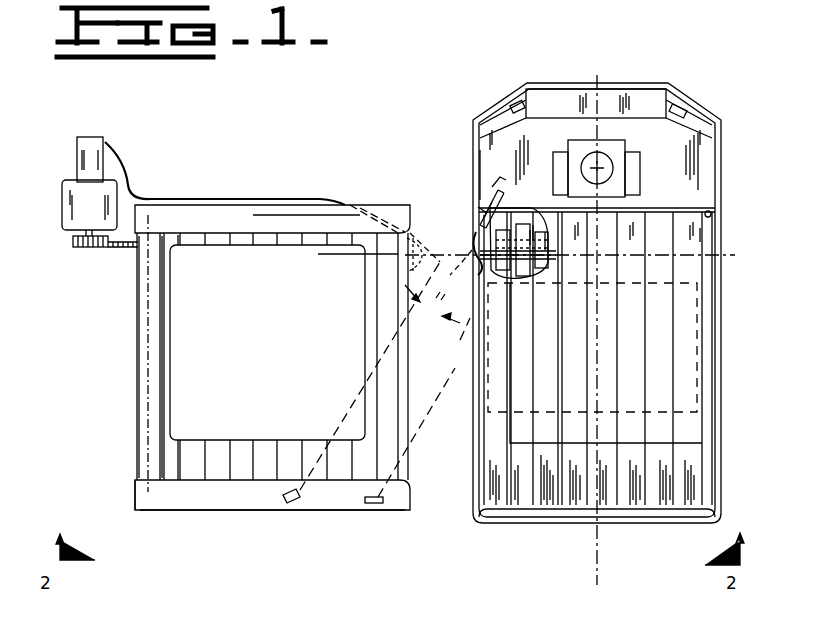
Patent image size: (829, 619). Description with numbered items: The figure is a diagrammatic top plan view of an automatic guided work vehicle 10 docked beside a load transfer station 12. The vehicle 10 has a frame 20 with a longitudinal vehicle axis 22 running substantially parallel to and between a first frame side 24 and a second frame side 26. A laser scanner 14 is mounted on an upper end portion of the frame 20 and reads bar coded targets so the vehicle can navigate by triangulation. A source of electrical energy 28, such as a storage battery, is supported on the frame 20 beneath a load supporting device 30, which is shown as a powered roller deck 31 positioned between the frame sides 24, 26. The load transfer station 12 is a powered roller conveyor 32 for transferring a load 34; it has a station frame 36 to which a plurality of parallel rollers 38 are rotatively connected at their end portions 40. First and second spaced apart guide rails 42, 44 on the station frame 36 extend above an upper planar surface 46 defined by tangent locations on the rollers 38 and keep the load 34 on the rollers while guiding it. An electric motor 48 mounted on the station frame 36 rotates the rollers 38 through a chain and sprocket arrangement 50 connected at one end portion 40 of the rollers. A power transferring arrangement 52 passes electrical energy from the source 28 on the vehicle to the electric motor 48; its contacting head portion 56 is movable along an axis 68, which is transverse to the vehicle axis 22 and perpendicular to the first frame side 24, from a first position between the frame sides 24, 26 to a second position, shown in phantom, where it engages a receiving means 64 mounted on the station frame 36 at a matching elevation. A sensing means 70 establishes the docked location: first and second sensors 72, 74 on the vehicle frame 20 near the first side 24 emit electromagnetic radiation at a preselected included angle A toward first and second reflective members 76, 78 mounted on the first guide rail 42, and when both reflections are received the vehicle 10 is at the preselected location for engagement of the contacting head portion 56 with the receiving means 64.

The work vehicle 10 is at (484, 103).
The load transfer station 12 is at (353, 200).
The laser scanner 14 is at (586, 152).
The frame 20 is at (633, 83).
The longitudinal vehicle axis 22 is at (597, 533).
The first frame side 24 is at (475, 397).
The second frame side 26 is at (720, 274).
The source of electrical energy 28 is at (705, 373).
The load supporting device 30 is at (529, 525).
The powered roller deck 31 is at (517, 502).
The powered roller conveyor 32 is at (138, 443).
The load 34 is at (279, 336).
The station frame 36 is at (227, 510).
The rollers 38 is at (160, 323).
The end portions 40 is at (240, 237).
The first guide rail 42 is at (193, 498).
The second guide rail 44 is at (253, 217).
The upper planar surface 46 is at (188, 240).
The electric motor 48 is at (98, 137).
The chain and sprocket arrangement 50 is at (100, 254).
The power transferring arrangement 52 is at (418, 157).
The contacting head portion 56 is at (489, 250).
The receiving means 64 is at (395, 273).
The axis 68 is at (340, 254).
The sensing means 70 is at (473, 201).
The first sensor 72 is at (477, 197).
The second sensor 74 is at (475, 208).
The first reflective member 76 is at (288, 507).
The second reflective member 78 is at (380, 507).
The included angle A is at (432, 305).